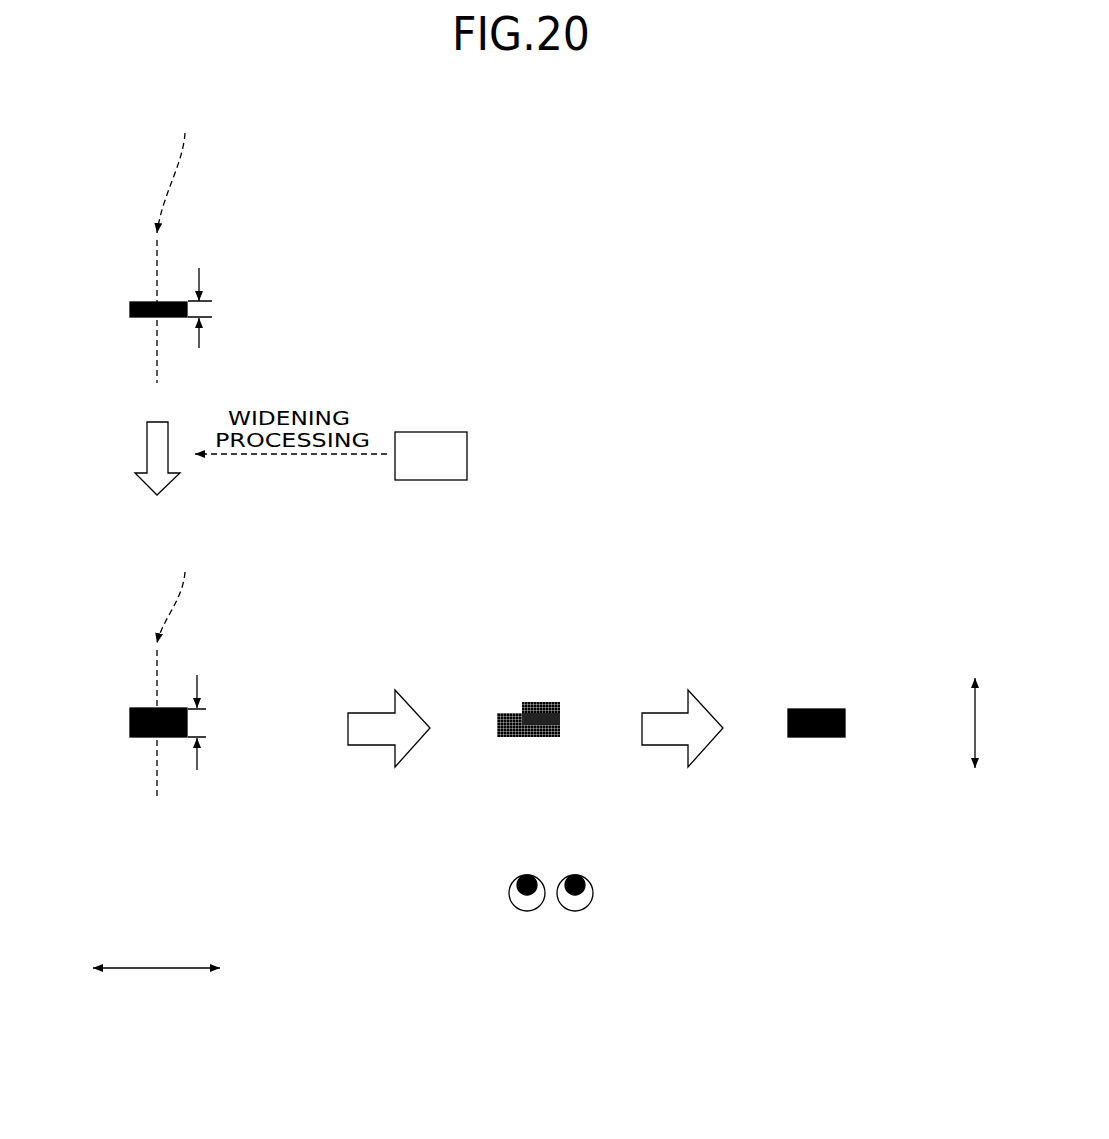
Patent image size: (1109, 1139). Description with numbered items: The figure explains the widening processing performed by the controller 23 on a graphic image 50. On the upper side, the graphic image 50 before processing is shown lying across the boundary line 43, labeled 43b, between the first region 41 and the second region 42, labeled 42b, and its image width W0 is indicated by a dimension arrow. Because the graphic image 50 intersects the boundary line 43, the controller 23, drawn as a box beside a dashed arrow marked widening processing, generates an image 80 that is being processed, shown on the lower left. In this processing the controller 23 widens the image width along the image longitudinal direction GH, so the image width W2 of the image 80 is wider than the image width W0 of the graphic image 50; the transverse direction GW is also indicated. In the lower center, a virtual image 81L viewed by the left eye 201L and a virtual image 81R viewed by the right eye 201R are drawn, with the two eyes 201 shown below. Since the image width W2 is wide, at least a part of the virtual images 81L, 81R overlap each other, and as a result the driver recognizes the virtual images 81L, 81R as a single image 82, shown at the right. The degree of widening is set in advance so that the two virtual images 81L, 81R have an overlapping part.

The first region 41 is at (75, 287).
The boundary line 43 is at (195, 452).
The scanning line 43b is at (195, 452).
The second region 42 is at (274, 458).
The pixel line 42b is at (225, 288).
The graphic image 50 is at (143, 302).
The image width W0 is at (220, 308).
The controller 23 is at (437, 432).
The image 80 is at (143, 708).
The image width W2 is at (220, 723).
The virtual image 81L is at (512, 713).
The virtual image 81R is at (547, 702).
The single image 82 is at (820, 709).
The image longitudinal direction GH is at (953, 723).
The horizontal gap GW is at (156, 956).
The left eye 201L is at (527, 913).
The right eye 201R is at (592, 930).
The eyes of observer 201 is at (566, 951).